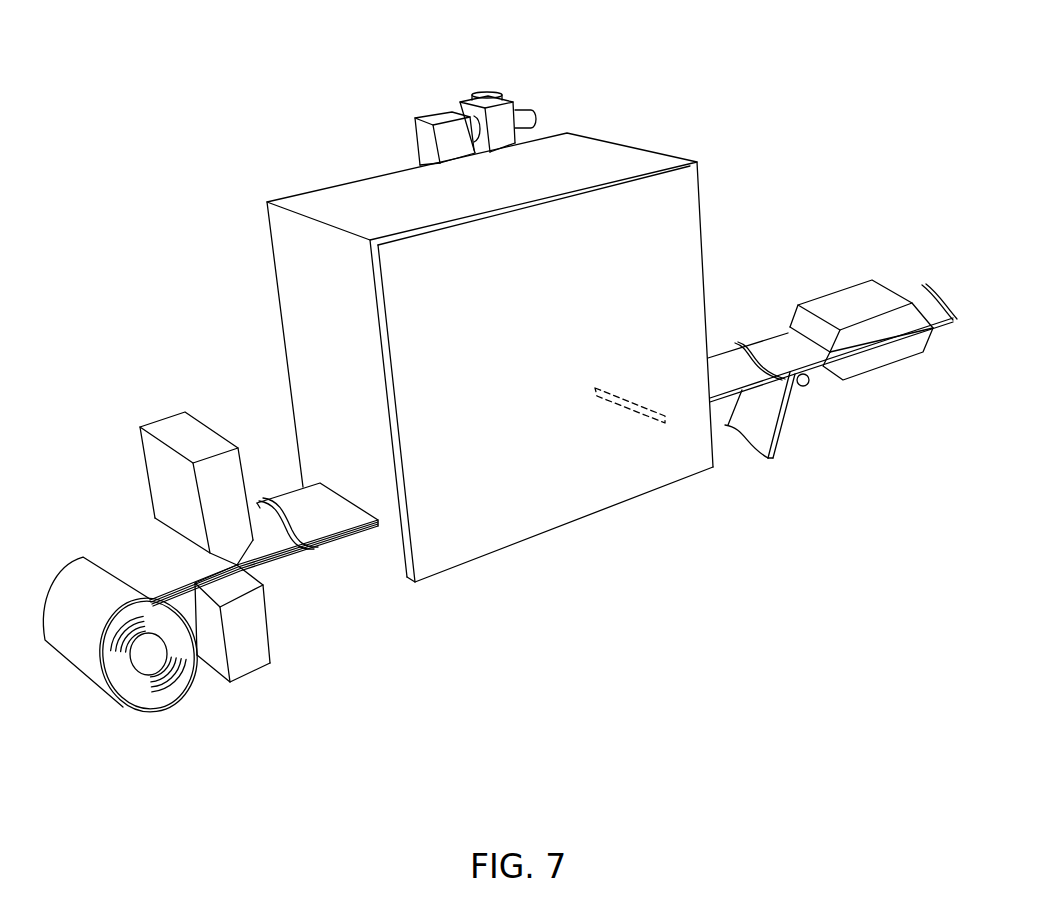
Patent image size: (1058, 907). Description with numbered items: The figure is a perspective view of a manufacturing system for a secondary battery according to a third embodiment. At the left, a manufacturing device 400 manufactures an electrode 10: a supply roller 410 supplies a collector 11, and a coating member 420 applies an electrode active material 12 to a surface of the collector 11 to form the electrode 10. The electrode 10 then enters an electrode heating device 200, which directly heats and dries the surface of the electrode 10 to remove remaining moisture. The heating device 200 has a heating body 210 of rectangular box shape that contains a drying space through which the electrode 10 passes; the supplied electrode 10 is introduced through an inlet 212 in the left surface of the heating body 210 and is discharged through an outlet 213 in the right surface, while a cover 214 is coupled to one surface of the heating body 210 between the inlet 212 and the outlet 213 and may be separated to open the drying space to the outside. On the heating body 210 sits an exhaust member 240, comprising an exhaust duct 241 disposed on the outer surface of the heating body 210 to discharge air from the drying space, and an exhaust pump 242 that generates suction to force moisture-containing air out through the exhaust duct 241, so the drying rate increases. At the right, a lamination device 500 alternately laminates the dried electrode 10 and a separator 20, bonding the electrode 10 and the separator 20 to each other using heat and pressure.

The electrode 10 is at (235, 448).
The collector 11 is at (108, 563).
The electrode active material 12 is at (292, 502).
The separator 20 is at (788, 422).
The electrode heating device 200 is at (487, 299).
The heating body 210 is at (638, 155).
The inlet 212 is at (347, 533).
The outlet 213 is at (660, 422).
The cover 214 is at (677, 163).
The exhaust member 240 is at (461, 82).
The exhaust duct 241 is at (435, 113).
The exhaust pump 242 is at (475, 107).
The manufacturing device 400 is at (165, 614).
The supply roller 410 is at (155, 665).
The coating member 420 is at (250, 660).
The lamination device 500 is at (850, 262).